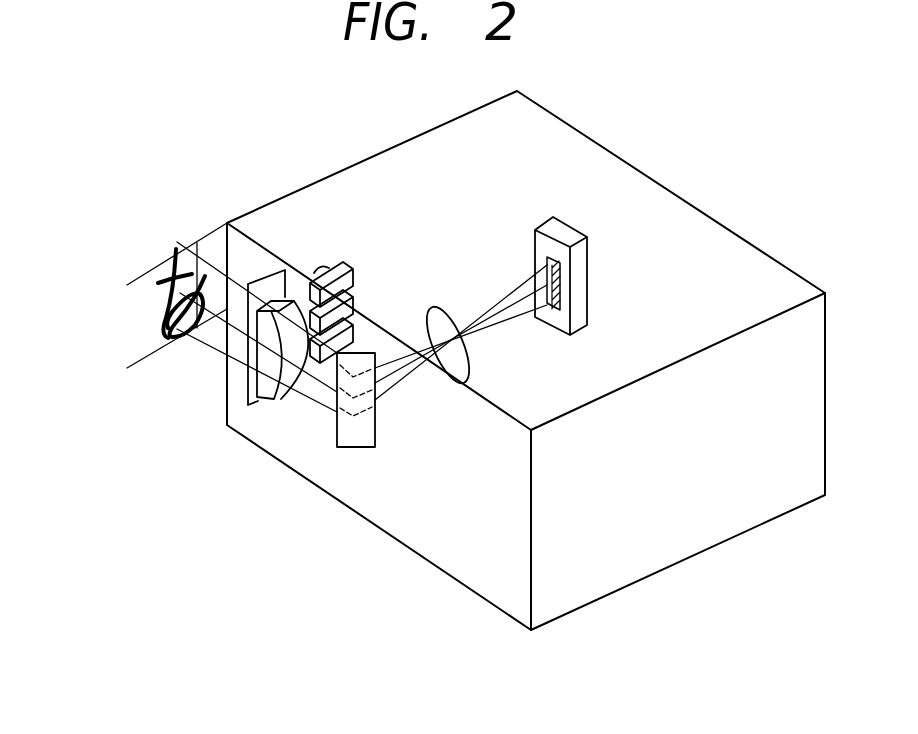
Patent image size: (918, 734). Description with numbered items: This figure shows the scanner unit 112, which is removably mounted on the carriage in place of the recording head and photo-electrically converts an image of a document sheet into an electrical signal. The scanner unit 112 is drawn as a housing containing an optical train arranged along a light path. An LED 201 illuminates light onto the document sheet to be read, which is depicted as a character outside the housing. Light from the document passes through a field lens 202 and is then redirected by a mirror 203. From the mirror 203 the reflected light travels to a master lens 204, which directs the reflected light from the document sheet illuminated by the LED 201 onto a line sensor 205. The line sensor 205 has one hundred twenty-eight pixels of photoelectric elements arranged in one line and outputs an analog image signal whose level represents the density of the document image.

The scanner unit 112 is at (633, 168).
The LED 201 is at (343, 262).
The field lens 202 is at (287, 388).
The mirror 203 is at (376, 432).
The master lens 204 is at (446, 306).
The line sensor 205 is at (590, 307).